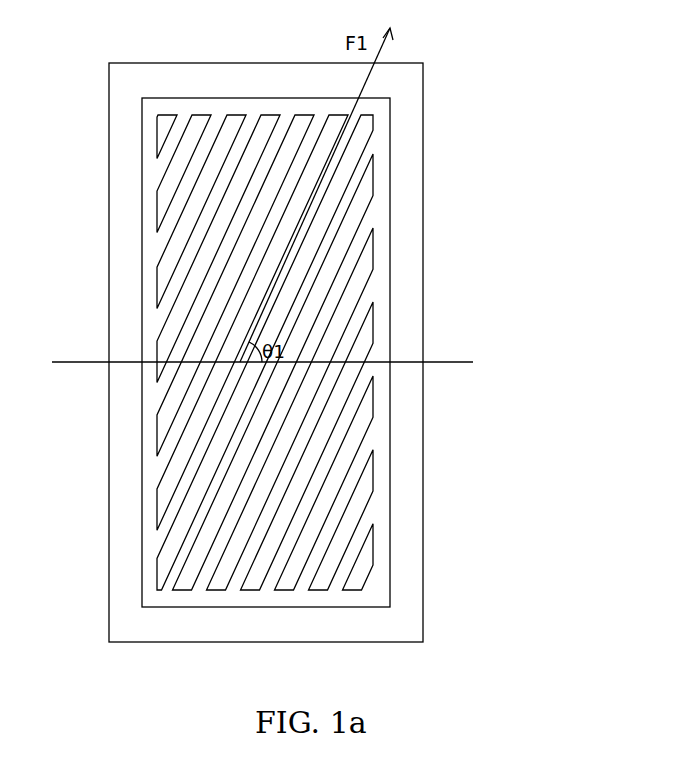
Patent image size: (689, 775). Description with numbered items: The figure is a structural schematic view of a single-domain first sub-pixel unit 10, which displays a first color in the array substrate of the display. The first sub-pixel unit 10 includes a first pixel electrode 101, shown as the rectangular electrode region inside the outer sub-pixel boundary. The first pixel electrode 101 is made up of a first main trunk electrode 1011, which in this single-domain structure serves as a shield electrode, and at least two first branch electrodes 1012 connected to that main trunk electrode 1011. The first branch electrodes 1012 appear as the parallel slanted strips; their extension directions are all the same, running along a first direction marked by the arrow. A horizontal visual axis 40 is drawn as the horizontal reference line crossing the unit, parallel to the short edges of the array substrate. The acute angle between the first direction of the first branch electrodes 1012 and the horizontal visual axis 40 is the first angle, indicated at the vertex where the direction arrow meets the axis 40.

The first sub-pixel unit 10 is at (415, 53).
The first pixel electrode 101 is at (490, 185).
The first main trunk electrode 1011 is at (383, 218).
The first branch electrode 1012 is at (327, 300).
The horizontal visual axis 40 is at (463, 362).